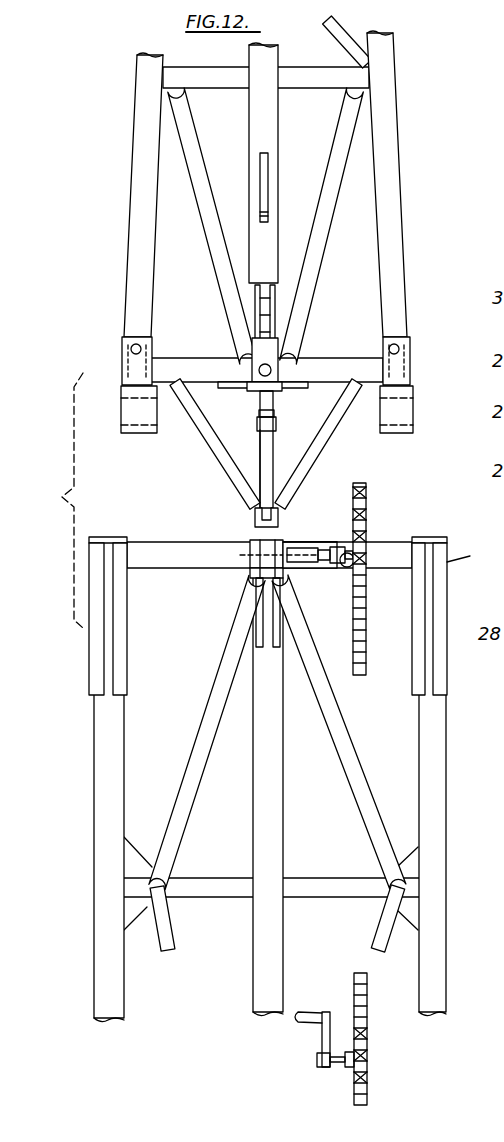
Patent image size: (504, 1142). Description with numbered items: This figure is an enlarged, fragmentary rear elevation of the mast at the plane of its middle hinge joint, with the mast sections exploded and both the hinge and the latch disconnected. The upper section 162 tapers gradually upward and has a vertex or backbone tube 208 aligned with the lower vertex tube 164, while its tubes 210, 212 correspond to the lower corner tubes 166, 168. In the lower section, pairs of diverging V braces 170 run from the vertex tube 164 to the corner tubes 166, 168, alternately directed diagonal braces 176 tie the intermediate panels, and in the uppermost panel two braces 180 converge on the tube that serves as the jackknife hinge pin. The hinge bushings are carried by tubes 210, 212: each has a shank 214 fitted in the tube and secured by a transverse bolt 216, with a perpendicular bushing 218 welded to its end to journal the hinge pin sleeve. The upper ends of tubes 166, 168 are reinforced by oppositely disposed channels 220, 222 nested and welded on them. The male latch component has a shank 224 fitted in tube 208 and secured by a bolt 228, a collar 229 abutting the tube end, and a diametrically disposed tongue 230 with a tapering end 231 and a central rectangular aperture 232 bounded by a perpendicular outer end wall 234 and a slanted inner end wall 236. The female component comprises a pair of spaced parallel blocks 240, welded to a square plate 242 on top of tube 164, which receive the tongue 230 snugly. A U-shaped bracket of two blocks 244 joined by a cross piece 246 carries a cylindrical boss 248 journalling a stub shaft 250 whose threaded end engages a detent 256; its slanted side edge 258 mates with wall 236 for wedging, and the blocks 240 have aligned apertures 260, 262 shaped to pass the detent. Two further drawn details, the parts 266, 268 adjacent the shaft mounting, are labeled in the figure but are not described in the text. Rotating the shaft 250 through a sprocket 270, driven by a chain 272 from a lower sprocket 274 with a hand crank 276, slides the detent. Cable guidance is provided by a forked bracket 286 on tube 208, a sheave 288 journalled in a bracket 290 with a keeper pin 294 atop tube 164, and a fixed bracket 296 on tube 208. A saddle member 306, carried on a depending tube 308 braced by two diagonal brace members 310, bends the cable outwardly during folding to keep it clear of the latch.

The upper section 162 is at (410, 162).
The vertex tube 164 is at (284, 818).
The corner tube 166 is at (448, 758).
The corner tube 168 is at (95, 746).
The diverging braces 170 is at (180, 560).
The diagonal braces 176 is at (172, 925).
The braces 180 is at (200, 730).
The backbone tube 208 is at (283, 146).
The tube 210 is at (410, 110).
The tube 212 is at (146, 114).
The shank 214 is at (120, 340).
The transverse bolt 216 is at (134, 344).
The bushing 218 is at (132, 436).
The channel 220 is at (100, 660).
The channel 222 is at (120, 678).
The shank 224 is at (292, 346).
The bolt 228 is at (260, 360).
The collar 229 is at (282, 390).
The tongue 230 is at (254, 398).
The tapering end 231 is at (259, 428).
The aperture 232 is at (258, 420).
The outer end wall 234 is at (276, 440).
The inner end wall 236 is at (278, 422).
The blocks 240 is at (252, 542).
The square plate 242 is at (252, 590).
The blocks 244 is at (302, 548).
The cross piece 246 is at (360, 528).
The cylindrical boss 248 is at (330, 553).
The stub shaft 250 is at (346, 553).
The detent 256 is at (302, 568).
The slanted side edge 258 is at (296, 530).
The aperture 260 is at (254, 576).
The aperture 262 is at (248, 555).
The pin 266 is at (354, 556).
The gear 268 is at (346, 566).
The sprocket 270 is at (368, 492).
The chain 272 is at (362, 785).
The lower sprocket 274 is at (368, 1080).
The hand crank 276 is at (322, 1040).
The forked bracket 286 is at (262, 160).
The sheave 288 is at (258, 632).
The bracket 290 is at (276, 638).
The pin 294 is at (475, 550).
The bracket 296 is at (276, 290).
The saddle member 306 is at (254, 516).
The tube 308 is at (263, 444).
The diagonal brace members 310 is at (206, 440).